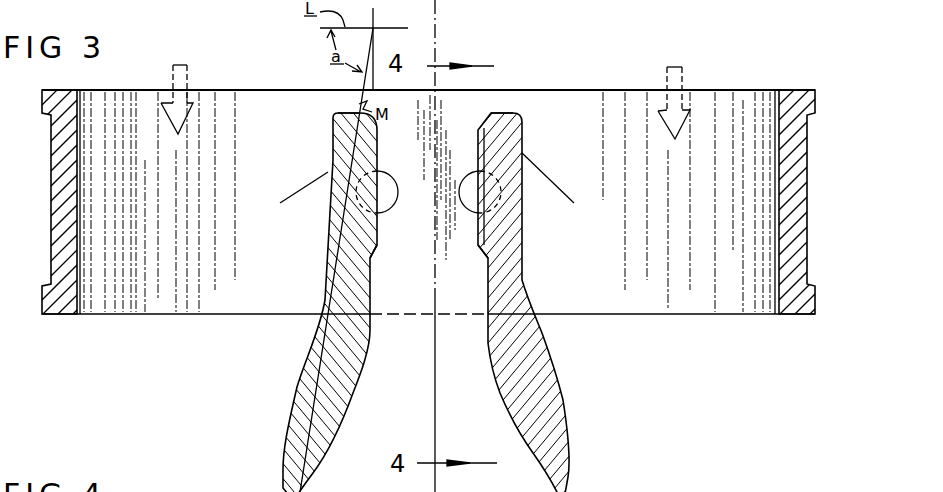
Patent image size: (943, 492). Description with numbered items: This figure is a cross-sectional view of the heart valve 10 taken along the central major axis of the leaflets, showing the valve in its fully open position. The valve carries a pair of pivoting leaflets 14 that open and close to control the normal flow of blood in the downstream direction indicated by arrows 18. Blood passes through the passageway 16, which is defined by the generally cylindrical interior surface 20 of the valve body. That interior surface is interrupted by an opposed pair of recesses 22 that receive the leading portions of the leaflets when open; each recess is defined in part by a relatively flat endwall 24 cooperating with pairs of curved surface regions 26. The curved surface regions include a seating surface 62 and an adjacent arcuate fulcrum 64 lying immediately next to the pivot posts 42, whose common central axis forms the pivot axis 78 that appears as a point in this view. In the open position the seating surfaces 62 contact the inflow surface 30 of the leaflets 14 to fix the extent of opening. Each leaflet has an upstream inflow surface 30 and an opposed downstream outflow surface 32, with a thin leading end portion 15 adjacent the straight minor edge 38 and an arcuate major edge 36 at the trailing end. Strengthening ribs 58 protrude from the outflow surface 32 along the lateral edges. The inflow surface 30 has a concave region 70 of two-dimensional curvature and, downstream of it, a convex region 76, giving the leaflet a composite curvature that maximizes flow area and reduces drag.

The heart valve 10 is at (639, 82).
The leaflets 14 is at (328, 333).
The leading end portions 15 is at (333, 130).
The passageway 16 is at (78, 293).
The arrows 18 is at (188, 72).
The cylindrical interior surface 20 is at (704, 194).
The recesses 22 is at (409, 246).
The endwall 24 is at (473, 100).
The curved surface regions 26 is at (326, 160).
The inflow surface 30 is at (318, 346).
The outflow surface 32 is at (353, 393).
The major arcuate edge 36 is at (280, 491).
The minor edge 38 is at (348, 118).
The pivot posts 42 is at (385, 175).
The strengthening ribs 58 is at (372, 234).
The seating surface 62 is at (333, 135).
The fulcrum 64 is at (523, 163).
The concave region 70 is at (328, 298).
The convex region 76 is at (293, 398).
The pivot axis 78 is at (471, 195).